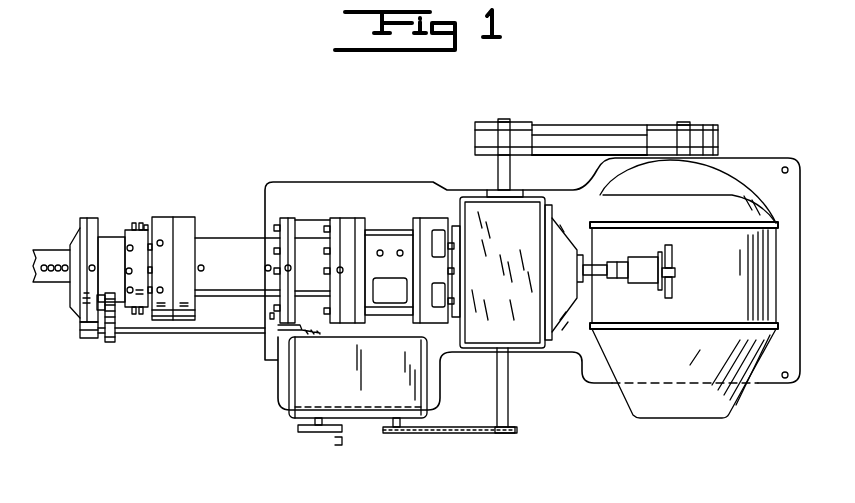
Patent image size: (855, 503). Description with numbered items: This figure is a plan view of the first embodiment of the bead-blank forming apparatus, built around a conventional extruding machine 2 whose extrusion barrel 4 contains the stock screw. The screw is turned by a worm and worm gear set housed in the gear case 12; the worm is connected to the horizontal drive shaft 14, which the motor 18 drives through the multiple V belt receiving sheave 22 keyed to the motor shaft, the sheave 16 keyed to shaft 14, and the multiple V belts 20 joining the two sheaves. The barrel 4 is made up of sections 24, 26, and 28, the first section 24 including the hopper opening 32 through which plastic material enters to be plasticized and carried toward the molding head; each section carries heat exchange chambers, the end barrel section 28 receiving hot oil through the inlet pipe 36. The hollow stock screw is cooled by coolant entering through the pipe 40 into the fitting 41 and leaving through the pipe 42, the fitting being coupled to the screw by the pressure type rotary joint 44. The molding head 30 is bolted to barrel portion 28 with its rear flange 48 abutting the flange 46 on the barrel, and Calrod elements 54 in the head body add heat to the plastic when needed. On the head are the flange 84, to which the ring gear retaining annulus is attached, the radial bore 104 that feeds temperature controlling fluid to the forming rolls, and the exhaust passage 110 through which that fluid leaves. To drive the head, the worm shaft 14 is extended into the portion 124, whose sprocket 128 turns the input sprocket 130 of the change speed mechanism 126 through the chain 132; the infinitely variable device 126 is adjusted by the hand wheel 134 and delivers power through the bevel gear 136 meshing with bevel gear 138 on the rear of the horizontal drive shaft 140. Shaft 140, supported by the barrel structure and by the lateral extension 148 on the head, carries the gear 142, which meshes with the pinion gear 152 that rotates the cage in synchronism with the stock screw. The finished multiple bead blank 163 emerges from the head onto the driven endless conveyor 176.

The extruding machine 2 is at (135, 490).
The extrusion barrel 4 is at (339, 202).
The gear case 12 is at (500, 330).
The horizontal drive shaft 14 is at (500, 164).
The sheave 16 is at (527, 123).
The motor 18 is at (688, 318).
The multiple V belts 20 is at (590, 146).
The multiple V belt receiving sheave 22 is at (717, 132).
The barrel section 24 is at (389, 240).
The barrel section 26 is at (310, 247).
The end barrel section 28 is at (234, 248).
The molding head 30 is at (115, 233).
The hopper opening 32 is at (387, 287).
The inlet pipe 36 is at (202, 265).
The pipe 40 is at (671, 256).
The fitting 41 is at (676, 272).
The pipe 42 is at (673, 297).
The pressure type rotary joint 44 is at (641, 265).
The flange 46 is at (186, 221).
The flange 48 is at (163, 320).
The Calrod elements 54 is at (146, 224).
The flange 84 is at (95, 216).
The bore 104 is at (78, 272).
The exhaust passage 110 is at (126, 271).
The shaft portion 124 is at (510, 407).
The change speed mechanism 126 is at (373, 397).
The sprocket 128 is at (503, 434).
The input sprocket 130 is at (398, 434).
The chain 132 is at (465, 434).
The hand wheel 134 is at (320, 434).
The bevel gear 136 is at (318, 342).
The bevel gear 138 is at (300, 326).
The horizontal drive shaft 140 is at (217, 336).
The gear 142 is at (112, 345).
The lateral extension 148 is at (83, 341).
The pinion gear 152 is at (112, 318).
The multiple bead blank 163 is at (52, 266).
The driven endless conveyor 176 is at (50, 251).